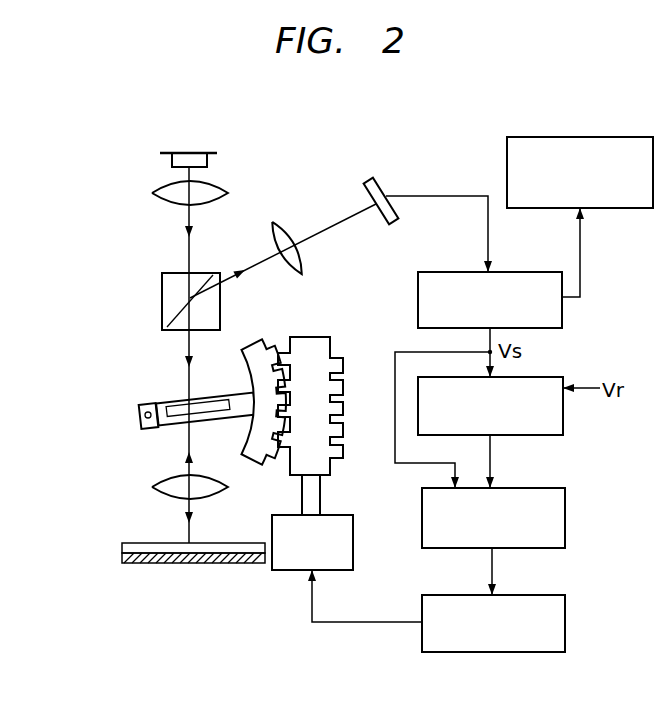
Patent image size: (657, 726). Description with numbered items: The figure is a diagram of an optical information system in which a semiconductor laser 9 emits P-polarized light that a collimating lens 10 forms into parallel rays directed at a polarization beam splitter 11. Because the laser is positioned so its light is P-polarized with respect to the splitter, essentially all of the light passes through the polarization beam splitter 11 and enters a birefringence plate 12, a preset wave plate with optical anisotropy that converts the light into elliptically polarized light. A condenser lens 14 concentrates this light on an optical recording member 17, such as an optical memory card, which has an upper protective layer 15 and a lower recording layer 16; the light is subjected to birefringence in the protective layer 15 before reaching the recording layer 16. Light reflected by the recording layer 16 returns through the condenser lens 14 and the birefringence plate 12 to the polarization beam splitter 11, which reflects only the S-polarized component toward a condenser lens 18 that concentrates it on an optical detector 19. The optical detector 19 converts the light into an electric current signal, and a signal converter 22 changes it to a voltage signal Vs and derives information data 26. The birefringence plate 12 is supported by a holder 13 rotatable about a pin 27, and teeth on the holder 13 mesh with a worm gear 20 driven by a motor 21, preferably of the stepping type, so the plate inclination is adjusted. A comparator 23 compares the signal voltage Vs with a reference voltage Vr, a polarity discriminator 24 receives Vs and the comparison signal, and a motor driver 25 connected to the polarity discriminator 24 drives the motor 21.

The semiconductor laser 9 is at (172, 160).
The collimating lens 10 is at (152, 193).
The polarization beam splitter 11 is at (162, 283).
The birefringence plate 12 is at (178, 406).
The holder 13 is at (142, 428).
The condenser lens 14 is at (153, 486).
The protective layer 15 is at (122, 548).
The recording layer 16 is at (169, 568).
The optical recording member 17 is at (150, 554).
The condenser lens 18 is at (276, 226).
The optical detector 19 is at (370, 180).
The worm gear 20 is at (322, 350).
The motor 21 is at (354, 533).
The signal converter 22 is at (452, 272).
The comparator 23 is at (563, 421).
The polarity discriminator 24 is at (565, 497).
The motor driver 25 is at (565, 605).
The information data 26 is at (585, 137).
The pin 27 is at (145, 410).